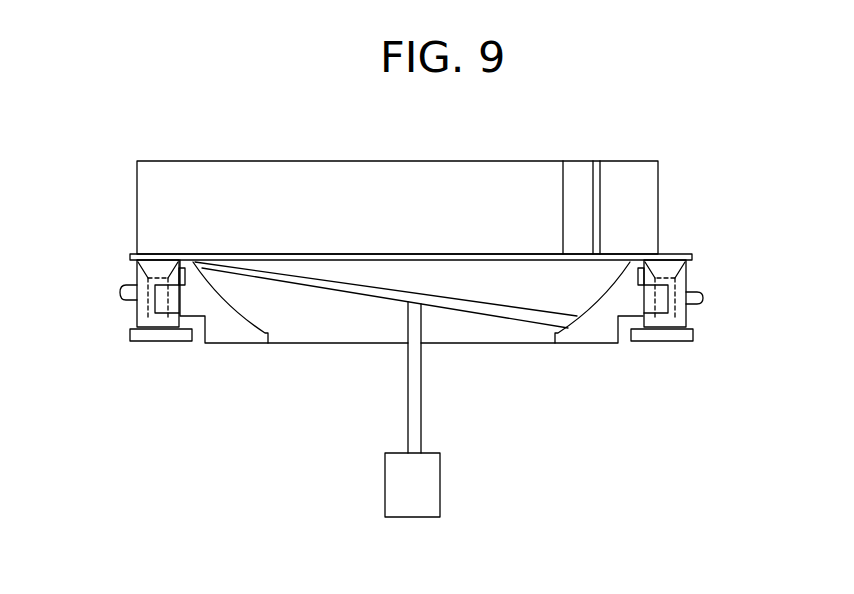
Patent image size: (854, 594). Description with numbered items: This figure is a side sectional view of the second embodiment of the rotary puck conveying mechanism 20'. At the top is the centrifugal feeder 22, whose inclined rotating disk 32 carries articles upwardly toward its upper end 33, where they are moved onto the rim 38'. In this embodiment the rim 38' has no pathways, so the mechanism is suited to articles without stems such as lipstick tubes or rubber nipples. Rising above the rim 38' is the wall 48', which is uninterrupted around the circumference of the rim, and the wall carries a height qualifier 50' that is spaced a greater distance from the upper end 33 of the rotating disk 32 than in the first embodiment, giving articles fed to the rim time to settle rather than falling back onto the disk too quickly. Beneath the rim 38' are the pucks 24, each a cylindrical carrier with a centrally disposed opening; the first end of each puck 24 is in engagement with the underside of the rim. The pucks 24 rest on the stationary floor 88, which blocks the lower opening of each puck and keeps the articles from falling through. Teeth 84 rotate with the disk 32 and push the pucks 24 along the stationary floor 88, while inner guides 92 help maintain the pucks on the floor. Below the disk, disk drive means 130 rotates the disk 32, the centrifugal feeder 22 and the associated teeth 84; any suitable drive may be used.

The rotary puck conveying mechanism 20' is at (437, 184).
The centrifugal feeder 22 is at (475, 285).
The puck 24 is at (687, 282).
The rotating disk 32 is at (485, 314).
The upper end 33 is at (270, 272).
The rim 38' is at (437, 239).
The wall 48' is at (397, 181).
The height qualifier 50' is at (591, 183).
The teeth 84 is at (190, 298).
The stationary floor 88 is at (168, 341).
The inner guide 92 is at (120, 291).
The disk drive means 130 is at (440, 502).